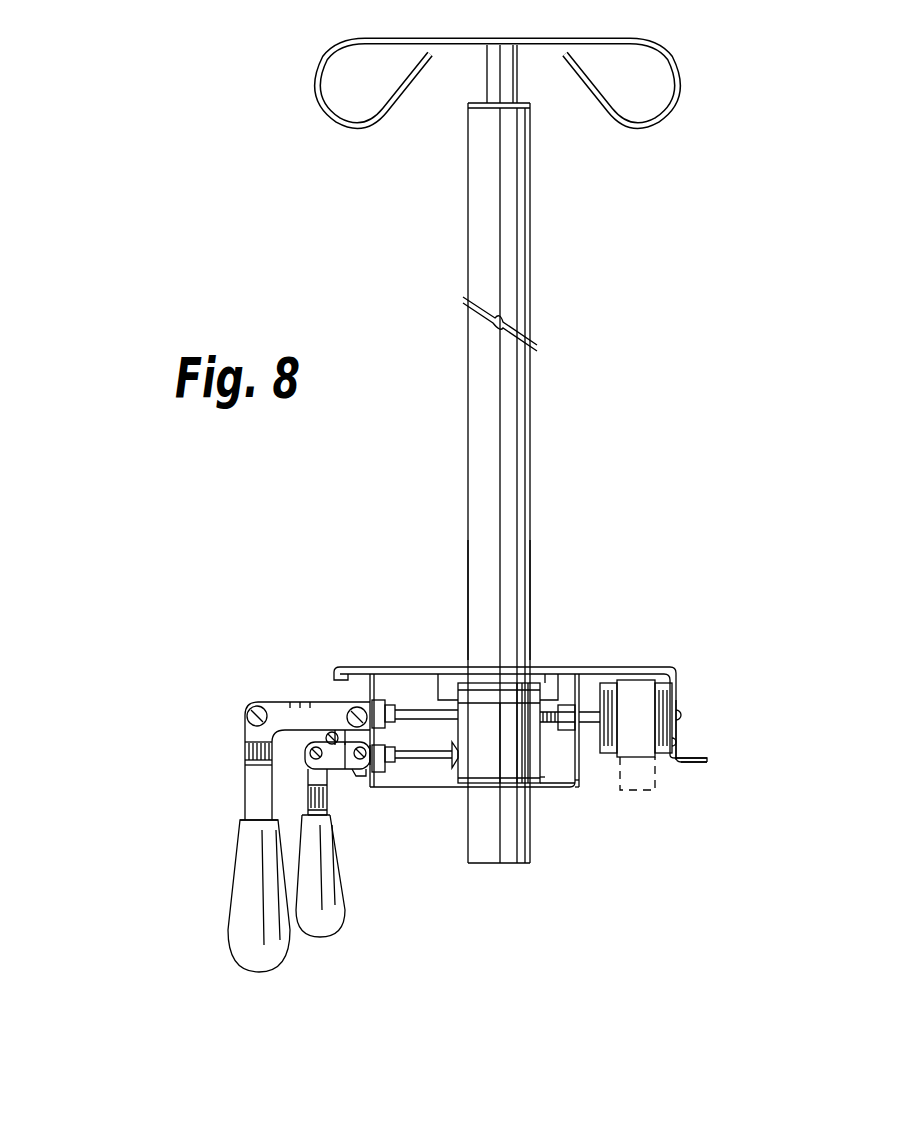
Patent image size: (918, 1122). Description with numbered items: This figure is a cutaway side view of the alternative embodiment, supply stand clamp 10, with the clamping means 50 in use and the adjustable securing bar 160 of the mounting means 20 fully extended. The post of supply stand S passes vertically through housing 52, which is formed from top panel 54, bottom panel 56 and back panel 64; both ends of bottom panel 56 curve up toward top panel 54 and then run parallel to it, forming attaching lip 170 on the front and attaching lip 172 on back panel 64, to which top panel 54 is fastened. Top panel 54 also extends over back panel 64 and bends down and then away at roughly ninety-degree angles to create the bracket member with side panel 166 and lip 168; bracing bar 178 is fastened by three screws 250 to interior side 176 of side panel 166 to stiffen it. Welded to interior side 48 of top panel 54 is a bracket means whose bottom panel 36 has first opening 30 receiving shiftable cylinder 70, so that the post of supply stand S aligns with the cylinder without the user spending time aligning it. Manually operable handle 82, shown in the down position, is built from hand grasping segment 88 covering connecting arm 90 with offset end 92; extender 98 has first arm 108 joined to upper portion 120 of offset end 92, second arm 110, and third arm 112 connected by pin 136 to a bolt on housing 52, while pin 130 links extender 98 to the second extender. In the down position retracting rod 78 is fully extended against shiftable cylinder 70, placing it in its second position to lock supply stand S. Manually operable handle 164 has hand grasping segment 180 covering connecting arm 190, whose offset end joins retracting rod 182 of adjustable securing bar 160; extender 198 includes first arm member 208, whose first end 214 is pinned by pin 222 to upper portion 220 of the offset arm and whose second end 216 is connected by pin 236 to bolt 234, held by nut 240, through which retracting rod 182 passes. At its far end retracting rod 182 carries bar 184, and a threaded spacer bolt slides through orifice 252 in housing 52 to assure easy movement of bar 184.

The supply stand clamp 10 is at (690, 215).
The supply stand S is at (485, 452).
The housing 52 is at (405, 555).
The mounting means 20 is at (650, 912).
The clamping means 50 is at (440, 935).
The first opening 30 is at (545, 672).
The top panel 54 is at (572, 670).
The bottom panel 36 is at (455, 683).
The interior side 48 is at (390, 680).
The attaching lip 170 is at (342, 667).
The attaching lip 172 is at (588, 672).
The orifice 252 is at (602, 672).
The bar 184 is at (635, 672).
The screws 250 is at (678, 715).
The bracing bar 178 is at (690, 676).
The side panel 166 is at (680, 735).
The interior side 176 is at (675, 752).
The lip 168 is at (700, 762).
The adjustable securing bar 160 is at (605, 790).
The back panel 64 is at (580, 795).
The bottom panel 56 is at (560, 790).
The shiftable cylinder 70 is at (545, 790).
The nut 240 is at (378, 700).
The retracting rod 182 is at (425, 770).
The retracting rod 78 is at (438, 770).
The manually operable handle 164 is at (143, 640).
The extender 198 is at (237, 575).
The first arm member 208 is at (283, 702).
The first end 214 is at (262, 702).
The pin 222 is at (248, 728).
The upper portion 220 is at (235, 735).
The second arm 110 is at (245, 740).
The upper portion 120 is at (250, 748).
The first arm 108 is at (252, 775).
The offset end 92 is at (255, 783).
The connecting arm 190 is at (250, 805).
The hand grasping segment 180 is at (250, 903).
The second end 216 is at (318, 735).
The pin 236 is at (330, 740).
The bolt 234 is at (350, 745).
The pin 136 is at (365, 770).
The third arm 112 is at (356, 770).
The extender 98 is at (345, 769).
The pin 130 is at (330, 775).
The connecting arm 90 is at (325, 778).
The hand grasping segment 88 is at (340, 925).
The manually operable handle 82 is at (330, 935).